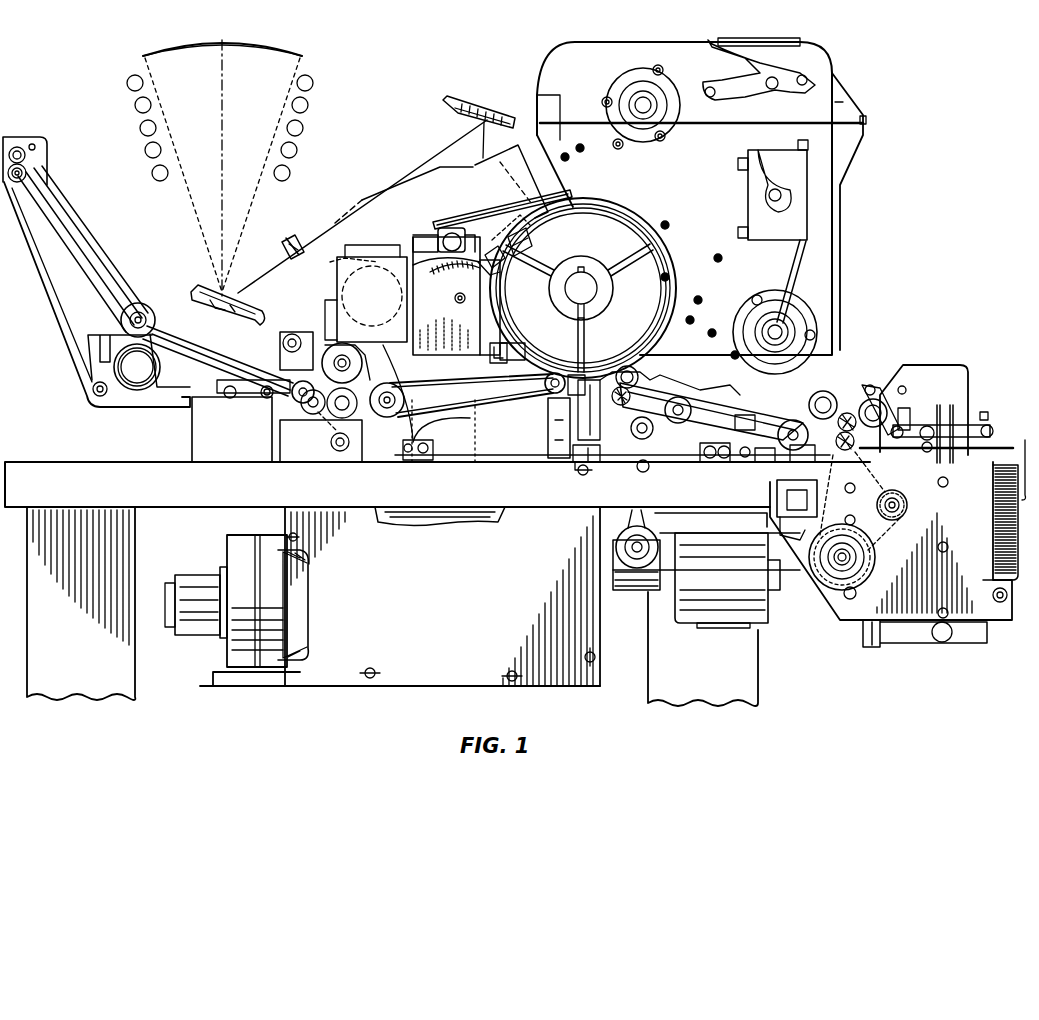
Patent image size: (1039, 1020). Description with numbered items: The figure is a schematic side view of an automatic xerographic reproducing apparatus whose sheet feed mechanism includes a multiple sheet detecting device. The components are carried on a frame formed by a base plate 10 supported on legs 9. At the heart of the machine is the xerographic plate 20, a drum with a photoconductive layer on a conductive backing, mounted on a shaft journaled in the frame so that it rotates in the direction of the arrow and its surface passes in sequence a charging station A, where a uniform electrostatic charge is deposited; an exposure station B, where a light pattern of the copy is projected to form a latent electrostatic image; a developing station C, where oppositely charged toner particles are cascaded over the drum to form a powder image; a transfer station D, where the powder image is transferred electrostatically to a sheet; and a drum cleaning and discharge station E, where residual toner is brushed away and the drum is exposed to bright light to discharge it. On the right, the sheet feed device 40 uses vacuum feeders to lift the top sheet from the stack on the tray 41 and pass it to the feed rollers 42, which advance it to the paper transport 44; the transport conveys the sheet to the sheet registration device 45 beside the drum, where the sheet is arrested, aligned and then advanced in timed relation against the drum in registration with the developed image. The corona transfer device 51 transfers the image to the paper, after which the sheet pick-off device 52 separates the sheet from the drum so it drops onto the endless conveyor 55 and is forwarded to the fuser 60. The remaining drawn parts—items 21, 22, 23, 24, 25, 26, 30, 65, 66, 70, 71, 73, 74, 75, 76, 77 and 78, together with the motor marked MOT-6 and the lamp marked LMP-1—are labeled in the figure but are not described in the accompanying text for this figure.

The legs 9 is at (135, 652).
The base plate 10 is at (90, 462).
The xerographic plate 20 is at (665, 266).
The gripper 21 is at (520, 240).
The stacker fan 22 is at (288, 54).
The deflector 23 is at (210, 290).
The guide 24 is at (280, 244).
The guide bar 25 is at (467, 118).
The guide plate 26 is at (560, 203).
The housing 30 is at (896, 173).
The sheet feed device 40 is at (1026, 408).
The tray 41 is at (956, 643).
The feed rollers 42 is at (847, 460).
The paper transport 44 is at (718, 425).
The sheet registration device 45 is at (618, 408).
The corona transfer device 51 is at (568, 373).
The sheet pick-off device 52 is at (512, 341).
The endless conveyor 55 is at (483, 412).
The fuser 60 is at (320, 314).
The feed arm 65 is at (64, 348).
The bracket 66 is at (495, 358).
The lamp housing 70 is at (431, 265).
The lens 71 is at (485, 268).
The lamp mount 73 is at (412, 236).
The scale 74 is at (430, 275).
The block 75 is at (385, 253).
The lead 76 is at (340, 262).
The base box 77 is at (444, 682).
The tray 78 is at (499, 526).
The motor MOT-6 is at (196, 577).
The lamp LMP-1 is at (452, 230).
The charging station A is at (480, 228).
The exposure station B is at (593, 229).
The developing station C is at (675, 236).
The transfer station D is at (557, 405).
The drum cleaning and discharge station E is at (498, 288).